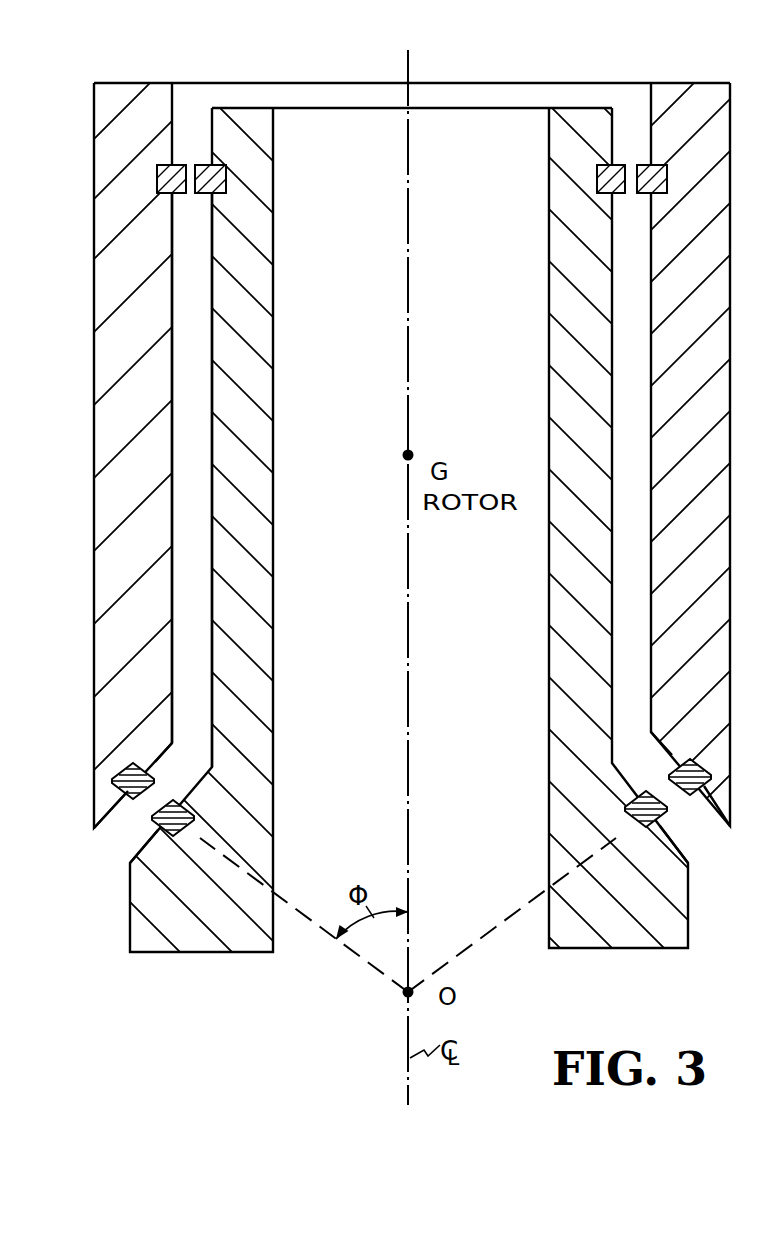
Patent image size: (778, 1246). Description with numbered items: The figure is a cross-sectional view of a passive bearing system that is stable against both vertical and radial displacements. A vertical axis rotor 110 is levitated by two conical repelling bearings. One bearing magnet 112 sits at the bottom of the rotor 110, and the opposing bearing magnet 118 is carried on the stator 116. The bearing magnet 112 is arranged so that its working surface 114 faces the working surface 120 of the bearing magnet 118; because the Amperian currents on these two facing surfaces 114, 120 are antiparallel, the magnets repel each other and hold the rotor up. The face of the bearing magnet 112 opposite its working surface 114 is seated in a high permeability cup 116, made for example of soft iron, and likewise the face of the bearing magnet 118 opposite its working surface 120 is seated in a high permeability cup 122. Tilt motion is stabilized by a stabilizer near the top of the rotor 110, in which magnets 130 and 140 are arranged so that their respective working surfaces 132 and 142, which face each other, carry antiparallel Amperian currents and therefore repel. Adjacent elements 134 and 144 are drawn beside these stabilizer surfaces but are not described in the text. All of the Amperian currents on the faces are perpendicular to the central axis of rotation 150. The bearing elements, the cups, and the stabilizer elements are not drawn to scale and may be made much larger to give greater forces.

The vertical axis rotor 110 is at (94, 389).
The bearing magnet 112 is at (155, 767).
The working surface 114 is at (140, 794).
The stator 116 is at (273, 574).
The bearing magnet 118 is at (193, 806).
The working surface 120 is at (152, 820).
The high permeability cup 122 is at (194, 826).
The magnet 130 is at (172, 208).
The working surface 132 is at (180, 165).
The upper housing seal ring 134 is at (157, 188).
The magnet 140 is at (207, 197).
The working surface 142 is at (198, 165).
The upper sleeve seal ring 144 is at (214, 174).
The central axis of rotation 150 is at (408, 313).